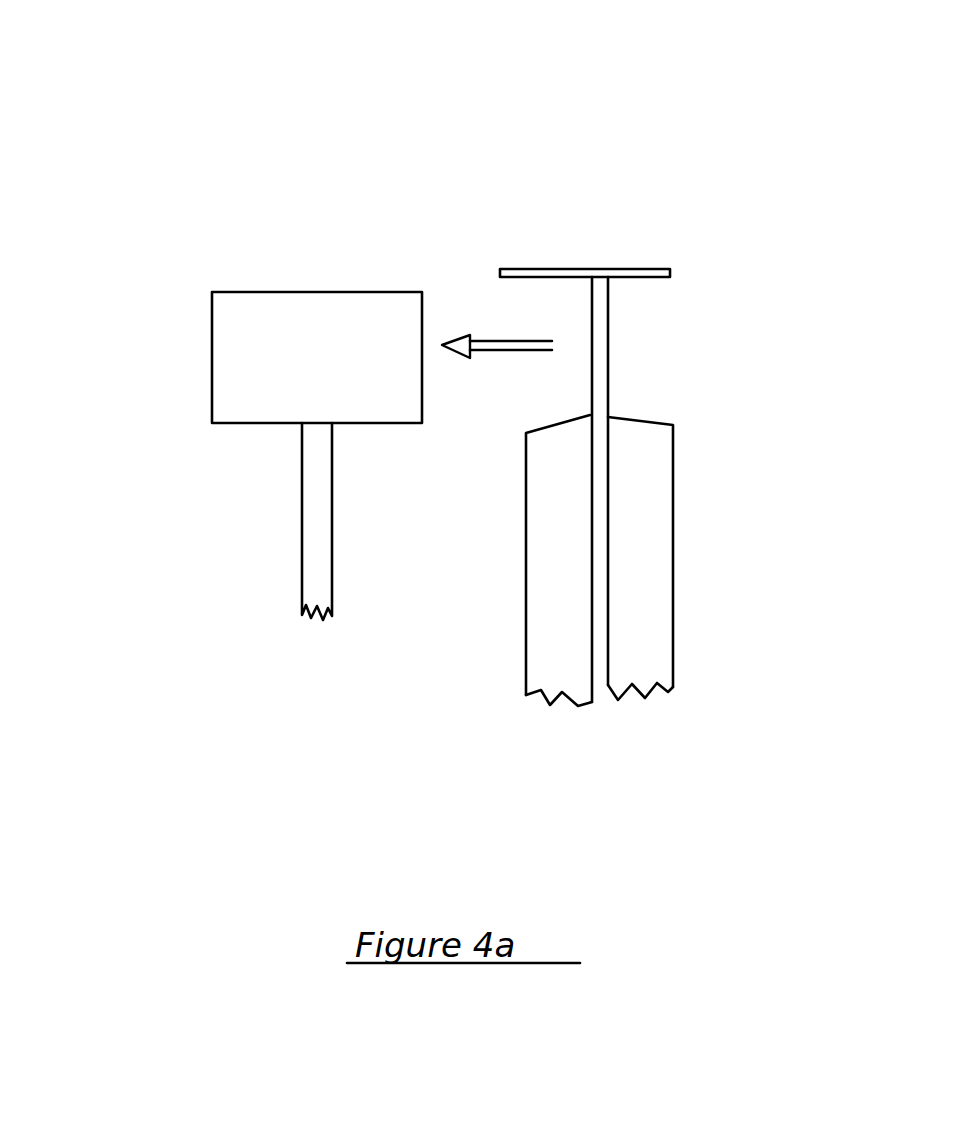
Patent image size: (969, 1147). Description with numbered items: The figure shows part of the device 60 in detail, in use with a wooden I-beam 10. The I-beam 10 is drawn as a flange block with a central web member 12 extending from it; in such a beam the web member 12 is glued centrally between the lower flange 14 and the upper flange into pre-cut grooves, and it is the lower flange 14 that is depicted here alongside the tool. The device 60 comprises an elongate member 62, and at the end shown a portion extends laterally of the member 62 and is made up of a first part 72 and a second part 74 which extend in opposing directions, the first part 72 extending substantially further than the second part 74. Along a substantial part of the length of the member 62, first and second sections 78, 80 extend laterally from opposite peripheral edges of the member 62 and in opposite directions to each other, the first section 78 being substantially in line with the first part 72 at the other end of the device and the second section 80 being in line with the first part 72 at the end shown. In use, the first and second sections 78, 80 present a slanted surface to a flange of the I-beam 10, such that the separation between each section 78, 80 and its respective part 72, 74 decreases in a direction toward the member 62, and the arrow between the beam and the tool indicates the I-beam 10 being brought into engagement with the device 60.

The wooden I-beam 10 is at (160, 255).
The central web member 12 is at (323, 517).
The lower flange 14 is at (302, 343).
The device 60 is at (665, 190).
The member 62 is at (598, 404).
The first part 72 is at (538, 276).
The second part 74 is at (672, 268).
The first section 78 is at (557, 587).
The second section 80 is at (647, 587).